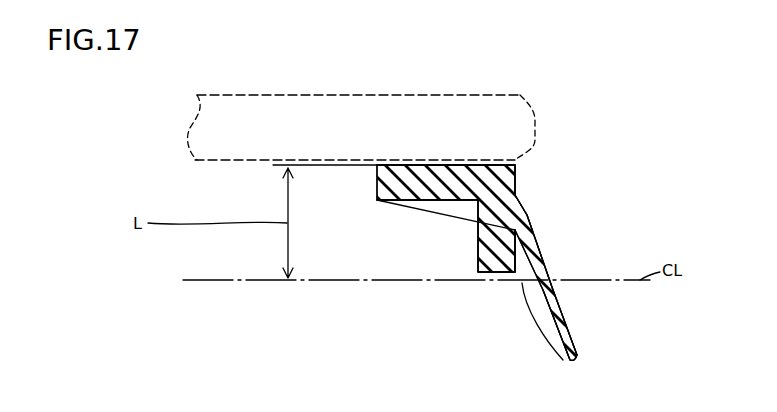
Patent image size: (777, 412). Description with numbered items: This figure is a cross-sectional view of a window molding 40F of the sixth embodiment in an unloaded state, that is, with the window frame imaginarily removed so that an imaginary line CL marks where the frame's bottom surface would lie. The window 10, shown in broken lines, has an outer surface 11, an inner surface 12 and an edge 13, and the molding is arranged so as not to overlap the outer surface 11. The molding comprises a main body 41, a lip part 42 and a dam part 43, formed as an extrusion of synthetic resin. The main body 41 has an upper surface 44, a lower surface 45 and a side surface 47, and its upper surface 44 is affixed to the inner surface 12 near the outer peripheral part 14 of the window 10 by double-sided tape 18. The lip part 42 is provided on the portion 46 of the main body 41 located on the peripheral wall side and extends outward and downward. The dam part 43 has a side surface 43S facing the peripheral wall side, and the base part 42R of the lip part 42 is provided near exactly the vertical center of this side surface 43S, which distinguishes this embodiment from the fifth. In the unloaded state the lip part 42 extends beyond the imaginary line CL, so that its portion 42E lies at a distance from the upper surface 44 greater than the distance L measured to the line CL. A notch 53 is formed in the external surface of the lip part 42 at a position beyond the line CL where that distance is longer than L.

The window 10 is at (341, 111).
The outer surface 11 is at (215, 95).
The inner surface 12 is at (217, 161).
The edge 13 is at (535, 128).
The outer peripheral part 14 is at (470, 163).
The double-sided tape 18 is at (445, 163).
The window molding 40F is at (528, 340).
The main body 41 is at (498, 183).
The lip part 42 is at (527, 258).
The dam part 43 is at (478, 228).
The upper surface 44 is at (398, 165).
The lower surface 45 is at (446, 203).
The portion 46 is at (504, 185).
The side surface 47 is at (377, 180).
The base part 42R is at (523, 213).
The side surface 43S is at (515, 245).
The portion 42E is at (542, 337).
The notch 53 is at (553, 293).